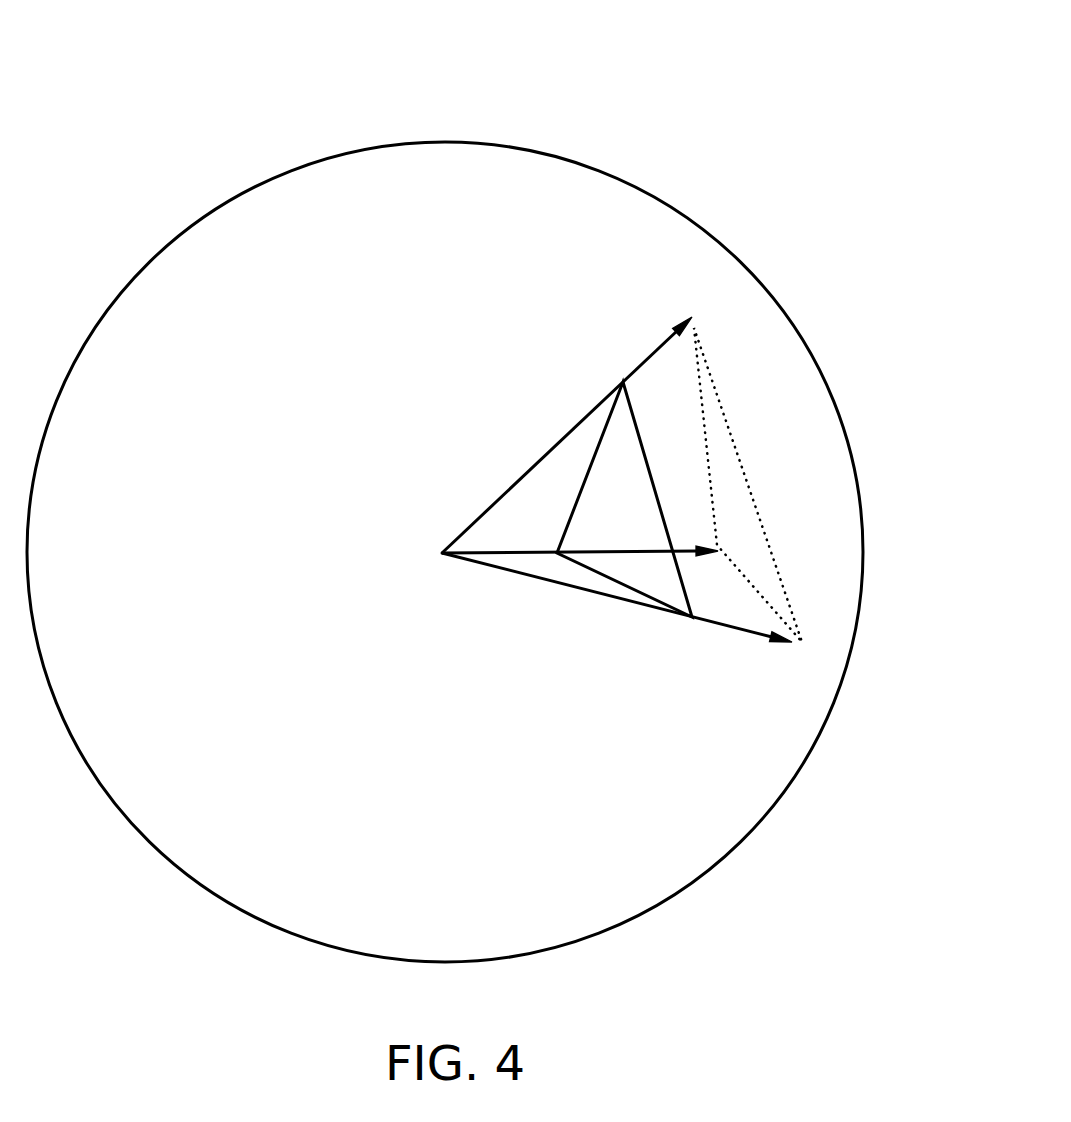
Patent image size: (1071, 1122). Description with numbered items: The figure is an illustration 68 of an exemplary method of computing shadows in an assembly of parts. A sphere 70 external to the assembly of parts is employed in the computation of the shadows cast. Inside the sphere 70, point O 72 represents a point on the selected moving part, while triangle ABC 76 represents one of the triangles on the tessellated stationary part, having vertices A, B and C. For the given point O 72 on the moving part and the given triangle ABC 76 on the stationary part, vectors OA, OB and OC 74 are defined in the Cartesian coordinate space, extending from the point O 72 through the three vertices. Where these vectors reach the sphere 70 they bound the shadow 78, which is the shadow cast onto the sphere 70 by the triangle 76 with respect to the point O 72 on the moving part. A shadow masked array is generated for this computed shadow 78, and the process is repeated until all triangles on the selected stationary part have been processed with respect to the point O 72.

The illustration of the exemplary method of computing shadows 68 is at (817, 77).
The sphere 70 is at (682, 210).
The point O 72 is at (422, 573).
The vectors OA, OB and OC 74 is at (508, 551).
The triangle ABC 76 is at (605, 447).
The shadow 78 is at (728, 448).